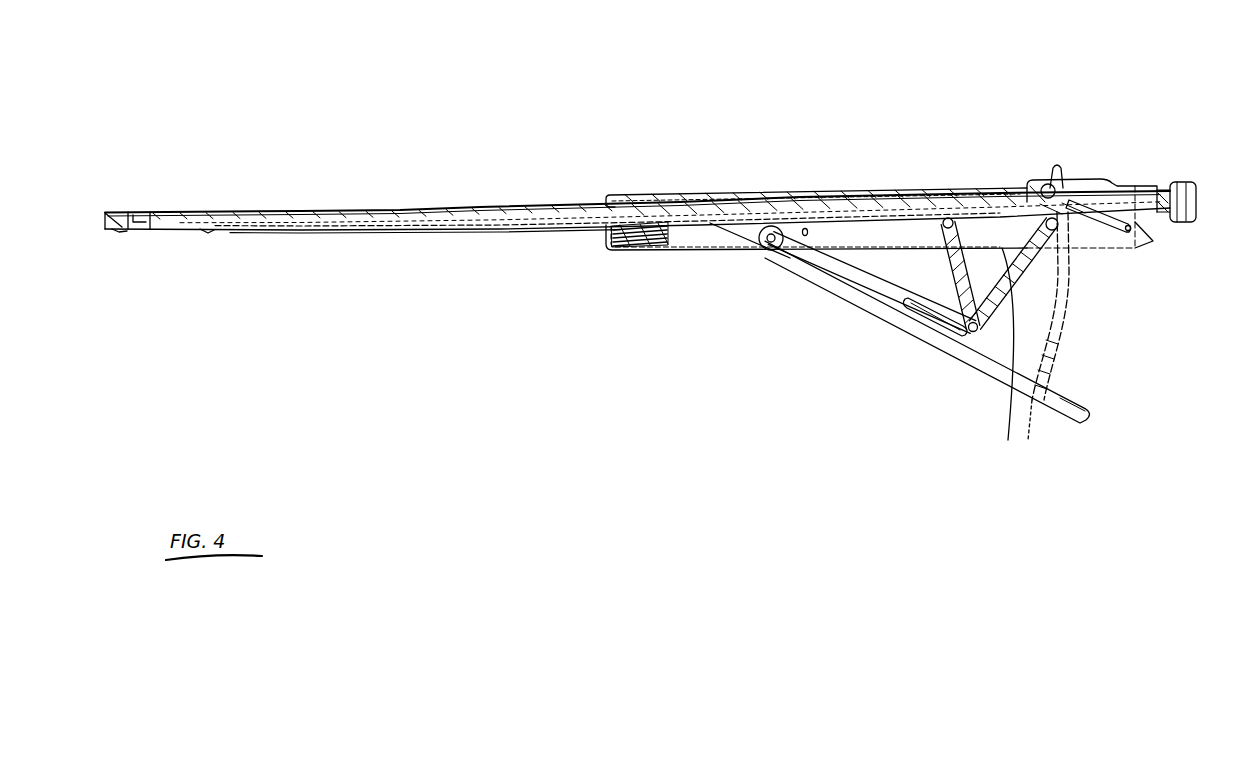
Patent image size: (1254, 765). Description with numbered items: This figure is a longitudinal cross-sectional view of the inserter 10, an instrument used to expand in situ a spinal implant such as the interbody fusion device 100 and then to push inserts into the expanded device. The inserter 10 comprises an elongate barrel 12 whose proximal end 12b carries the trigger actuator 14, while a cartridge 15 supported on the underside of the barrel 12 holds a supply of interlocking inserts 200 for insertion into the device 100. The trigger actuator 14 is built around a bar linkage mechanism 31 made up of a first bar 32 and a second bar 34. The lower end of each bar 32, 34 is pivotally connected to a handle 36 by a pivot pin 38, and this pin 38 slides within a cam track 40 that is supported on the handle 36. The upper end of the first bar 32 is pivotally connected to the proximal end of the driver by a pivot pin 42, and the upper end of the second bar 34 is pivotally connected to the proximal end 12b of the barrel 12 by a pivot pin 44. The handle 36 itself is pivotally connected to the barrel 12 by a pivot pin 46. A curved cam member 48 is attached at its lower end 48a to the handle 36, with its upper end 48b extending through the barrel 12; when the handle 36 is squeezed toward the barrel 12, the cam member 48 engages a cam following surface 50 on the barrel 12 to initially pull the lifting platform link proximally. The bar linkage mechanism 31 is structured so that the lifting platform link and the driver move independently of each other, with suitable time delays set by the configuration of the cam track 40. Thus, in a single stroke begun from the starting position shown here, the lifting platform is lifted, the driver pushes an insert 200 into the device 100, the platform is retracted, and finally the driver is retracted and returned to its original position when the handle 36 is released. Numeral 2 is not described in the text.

The interbody fusion device 100 is at (125, 210).
The elongate barrel 12 is at (640, 195).
The proximal end 12b is at (1078, 183).
The cartridge 15 is at (632, 255).
The interlocking inserts 200 is at (610, 232).
The pivot pin 46 is at (765, 250).
The pivot pin 42 is at (935, 215).
The pivot pin 44 is at (1060, 228).
The first bar 32 is at (960, 262).
The cam track 40 is at (923, 317).
The pivot pin 38 is at (962, 322).
The trigger actuator 14 is at (937, 387).
The bar linkage mechanism 31 is at (980, 333).
The second bar 34 is at (1008, 382).
The curved cam member 48 is at (1050, 337).
The lower end 48a is at (1040, 398).
The upper end 48b is at (1048, 185).
The cam following surface 50 is at (1048, 184).
The end cap 2 is at (1192, 182).
The inserter 10 is at (928, 121).
The handle 36 is at (1063, 425).